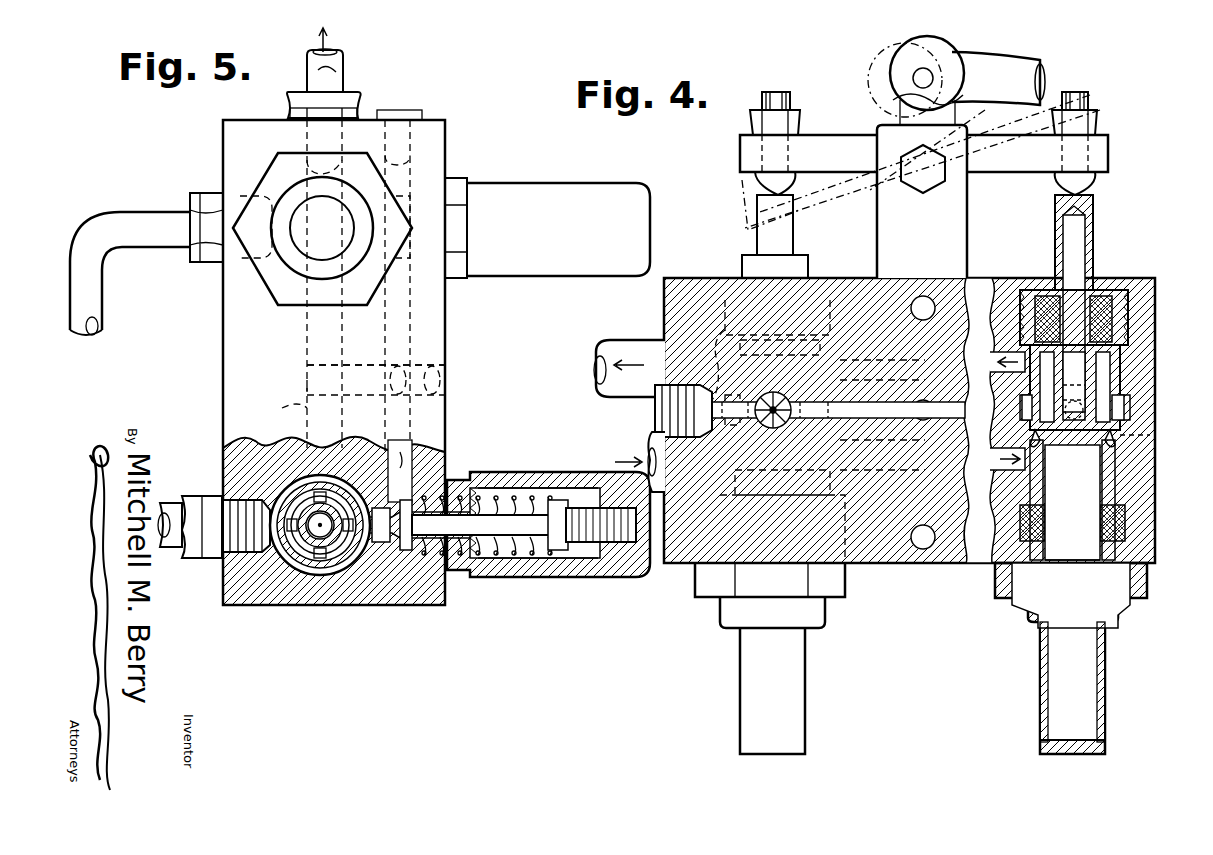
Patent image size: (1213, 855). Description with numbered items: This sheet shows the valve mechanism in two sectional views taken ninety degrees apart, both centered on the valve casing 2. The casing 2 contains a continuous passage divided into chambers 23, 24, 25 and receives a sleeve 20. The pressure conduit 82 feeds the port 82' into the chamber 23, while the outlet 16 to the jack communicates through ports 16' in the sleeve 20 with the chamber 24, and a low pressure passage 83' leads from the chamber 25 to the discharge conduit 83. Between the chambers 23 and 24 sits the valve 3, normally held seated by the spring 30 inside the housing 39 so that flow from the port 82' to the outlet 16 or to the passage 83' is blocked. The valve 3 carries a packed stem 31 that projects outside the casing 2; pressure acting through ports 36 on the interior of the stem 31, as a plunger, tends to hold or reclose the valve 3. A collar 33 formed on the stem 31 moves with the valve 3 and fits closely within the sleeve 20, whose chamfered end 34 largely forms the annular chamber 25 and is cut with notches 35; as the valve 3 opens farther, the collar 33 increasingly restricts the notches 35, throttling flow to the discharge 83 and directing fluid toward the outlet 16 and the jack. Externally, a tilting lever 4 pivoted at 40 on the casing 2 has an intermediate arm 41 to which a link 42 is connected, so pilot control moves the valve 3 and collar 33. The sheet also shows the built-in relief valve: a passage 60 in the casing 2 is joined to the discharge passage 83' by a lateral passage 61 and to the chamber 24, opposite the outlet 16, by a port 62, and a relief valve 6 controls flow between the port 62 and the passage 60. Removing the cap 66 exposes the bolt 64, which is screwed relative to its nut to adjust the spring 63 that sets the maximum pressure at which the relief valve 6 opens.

In FIG. 5, the valve casing 2 is at (223, 328).
In FIG. 4, the valve casing 2 is at (683, 558).
In FIG. 4, the valve 3 is at (1150, 468).
In FIG. 4, the tilting lever 4 is at (1100, 146).
In FIG. 5, the relief valve 6 is at (395, 555).
In FIG. 5, the outlet 16 is at (190, 556).
In FIG. 4, the outlet 16 is at (1156, 445).
In FIG. 5, the ports 16' is at (175, 372).
In FIG. 4, the ports 16' is at (1108, 407).
In FIG. 5, the sleeve 20 is at (242, 605).
In FIG. 4, the chamber 23 is at (1130, 500).
In FIG. 5, the chamber 24 is at (322, 582).
In FIG. 4, the chamber 24 is at (1132, 398).
In FIG. 4, the chamber 25 is at (1120, 362).
In FIG. 4, the spring 30 is at (1112, 608).
In FIG. 5, the stem 31 is at (290, 590).
In FIG. 4, the stem 31 is at (1090, 232).
In FIG. 4, the collar 33 is at (1110, 352).
In FIG. 4, the chamfered sleeve end 34 is at (1125, 380).
In FIG. 4, the notches 35 is at (1110, 300).
In FIG. 4, the ports 36 is at (988, 470).
In FIG. 4, the housing 39 is at (740, 690).
In FIG. 4, the pivot 40 is at (923, 160).
In FIG. 4, the intermediate arm 41 is at (900, 72).
In FIG. 4, the link 42 is at (1010, 76).
In FIG. 5, the passage 60 is at (400, 452).
In FIG. 4, the passage 60 is at (890, 278).
In FIG. 5, the lateral passage 61 is at (357, 365).
In FIG. 4, the lateral passage 61 is at (926, 400).
In FIG. 5, the port 62 is at (375, 560).
In FIG. 5, the spring 63 is at (490, 562).
In FIG. 5, the bolt 64 is at (586, 548).
In FIG. 5, the cap 66 is at (524, 192).
In FIG. 5, the pressure conduit 82 is at (341, 92).
In FIG. 4, the pressure conduit 82 is at (624, 462).
In FIG. 5, the port 82' is at (278, 388).
In FIG. 4, the port 82' is at (1027, 579).
In FIG. 5, the discharge conduit 83 is at (351, 60).
In FIG. 4, the discharge conduit 83 is at (640, 388).
In FIG. 4, the low pressure passage 83' is at (1000, 347).